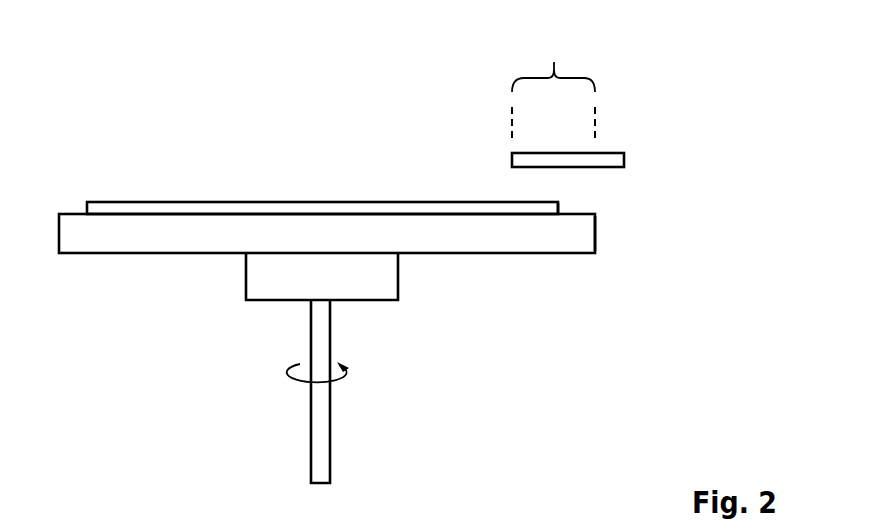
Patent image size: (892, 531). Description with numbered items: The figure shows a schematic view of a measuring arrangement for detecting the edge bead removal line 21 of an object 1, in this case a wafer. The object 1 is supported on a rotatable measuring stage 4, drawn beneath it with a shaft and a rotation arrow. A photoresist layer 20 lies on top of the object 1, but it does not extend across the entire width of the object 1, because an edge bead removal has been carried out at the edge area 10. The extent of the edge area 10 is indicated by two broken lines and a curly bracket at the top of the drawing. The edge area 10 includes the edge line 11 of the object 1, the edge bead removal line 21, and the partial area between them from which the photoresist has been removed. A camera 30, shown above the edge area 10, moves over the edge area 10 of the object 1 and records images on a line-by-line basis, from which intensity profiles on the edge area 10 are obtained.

The object 1 is at (528, 235).
The edge line 11 is at (595, 235).
The photoresist layer 20 is at (432, 208).
The edge bead removal line 21 is at (558, 208).
The rotatable measuring stage 4 is at (392, 293).
The camera 30 is at (600, 168).
The edge area 10 is at (553, 85).